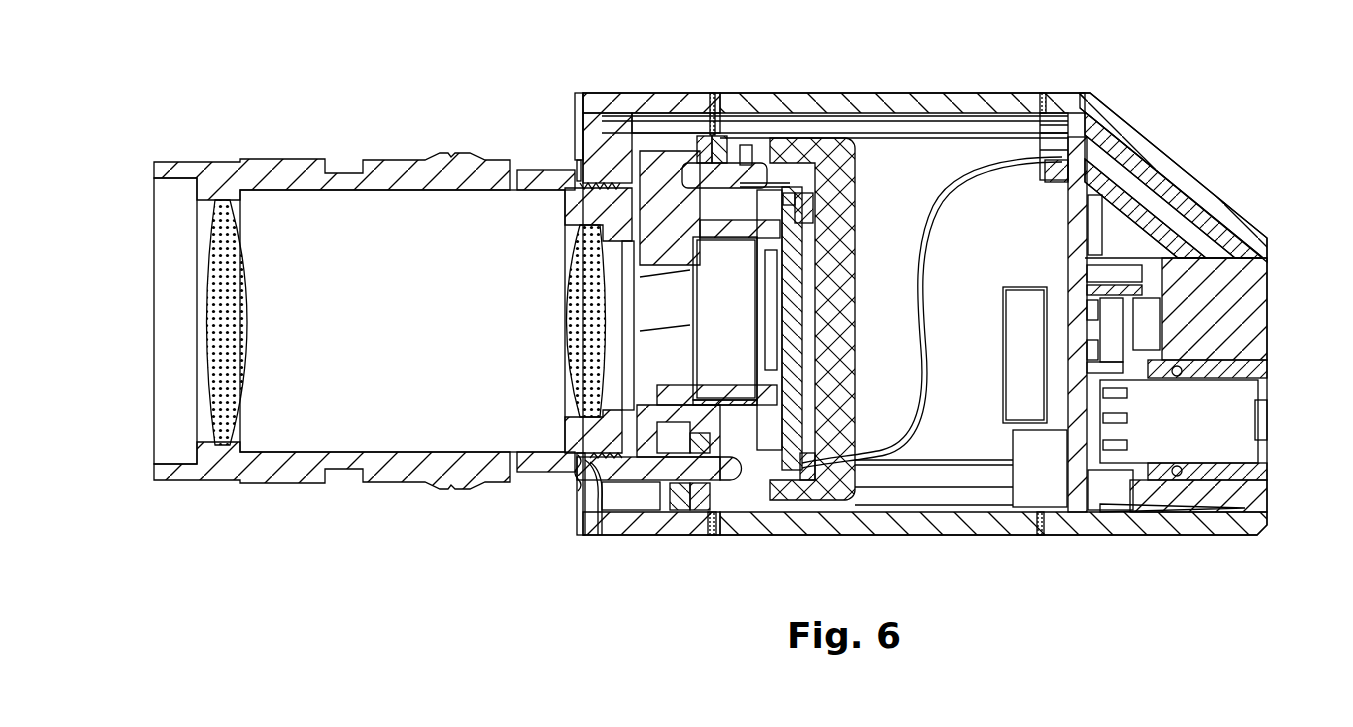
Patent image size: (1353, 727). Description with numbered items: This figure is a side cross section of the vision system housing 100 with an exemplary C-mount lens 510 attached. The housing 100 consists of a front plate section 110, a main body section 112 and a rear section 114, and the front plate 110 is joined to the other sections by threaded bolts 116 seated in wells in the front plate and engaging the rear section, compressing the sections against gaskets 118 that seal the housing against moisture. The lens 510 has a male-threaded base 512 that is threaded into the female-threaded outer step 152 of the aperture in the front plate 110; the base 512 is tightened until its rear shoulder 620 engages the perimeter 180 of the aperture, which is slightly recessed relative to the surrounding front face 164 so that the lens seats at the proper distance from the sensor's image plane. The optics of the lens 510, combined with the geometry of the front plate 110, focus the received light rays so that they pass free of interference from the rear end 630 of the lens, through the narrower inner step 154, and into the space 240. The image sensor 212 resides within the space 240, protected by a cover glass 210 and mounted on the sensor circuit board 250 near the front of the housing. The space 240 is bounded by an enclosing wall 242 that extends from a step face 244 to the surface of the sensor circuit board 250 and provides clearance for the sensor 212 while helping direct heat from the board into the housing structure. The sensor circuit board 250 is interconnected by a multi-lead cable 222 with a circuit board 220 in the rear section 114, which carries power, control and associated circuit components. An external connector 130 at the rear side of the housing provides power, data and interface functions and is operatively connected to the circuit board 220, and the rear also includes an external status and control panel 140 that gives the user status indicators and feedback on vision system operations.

The housing 100 is at (850, 92).
The front plate section 110 is at (640, 106).
The main body section 112 is at (918, 105).
The rear section 114 is at (1102, 108).
The threaded bolts 116 is at (960, 127).
The gaskets 118 is at (712, 538).
The external connector 130 is at (1260, 392).
The external status and control panel 140 is at (1165, 152).
The outer step 152 is at (616, 108).
The inner step 154 is at (648, 253).
The front face 164 is at (573, 112).
The perimeter of the aperture 180 is at (598, 545).
The cover glass 210 is at (802, 292).
The image sensor 212 is at (780, 337).
The circuit board 220 is at (1078, 152).
The multi-lead cable 222 is at (935, 274).
The space 240 is at (746, 363).
The enclosing wall 242 is at (755, 218).
The step face 244 is at (700, 248).
The sensor circuit board 250 is at (716, 175).
The C-mount lens 510 is at (335, 160).
The male-threaded base 512 is at (563, 485).
The rear shoulder 620 is at (580, 178).
The rear end of the lens 630 is at (622, 305).